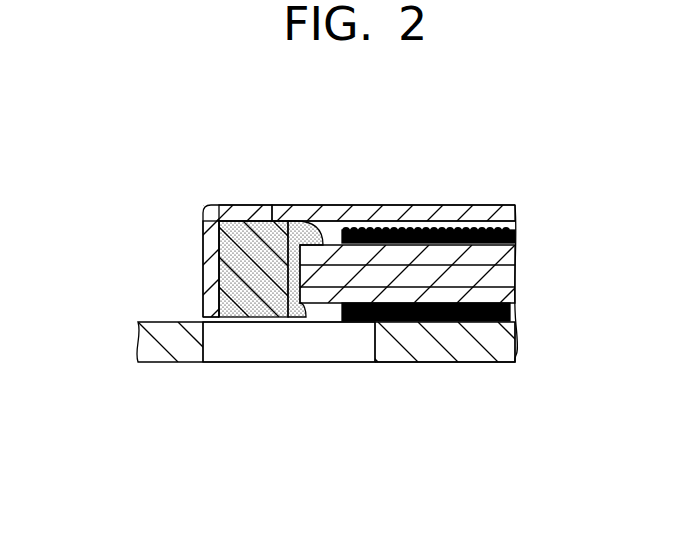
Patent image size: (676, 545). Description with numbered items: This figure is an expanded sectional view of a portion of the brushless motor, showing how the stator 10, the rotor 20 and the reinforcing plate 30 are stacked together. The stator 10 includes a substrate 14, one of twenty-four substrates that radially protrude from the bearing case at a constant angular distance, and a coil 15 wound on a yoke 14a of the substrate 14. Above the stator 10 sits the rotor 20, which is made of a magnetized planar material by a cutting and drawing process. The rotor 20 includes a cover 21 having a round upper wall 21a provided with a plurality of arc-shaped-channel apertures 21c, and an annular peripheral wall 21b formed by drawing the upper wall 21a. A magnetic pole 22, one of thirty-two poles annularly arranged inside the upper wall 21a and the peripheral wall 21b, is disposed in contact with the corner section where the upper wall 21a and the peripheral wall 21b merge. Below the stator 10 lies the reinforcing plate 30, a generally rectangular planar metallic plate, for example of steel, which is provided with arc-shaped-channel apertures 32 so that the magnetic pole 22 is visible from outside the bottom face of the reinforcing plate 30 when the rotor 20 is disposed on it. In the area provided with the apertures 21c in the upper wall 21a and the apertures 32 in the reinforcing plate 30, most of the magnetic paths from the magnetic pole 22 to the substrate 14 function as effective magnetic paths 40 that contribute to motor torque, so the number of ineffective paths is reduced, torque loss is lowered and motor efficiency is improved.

The stator 10 is at (330, 303).
The substrate 14 is at (510, 257).
The yoke 14a is at (438, 275).
The coil 15 is at (437, 236).
The rotor 20 is at (488, 205).
The cover 21 is at (209, 205).
The upper wall 21a is at (230, 205).
The peripheral wall 21b is at (215, 283).
The arc-shaped-channel aperture 21c is at (353, 205).
The magnetic pole 22 is at (247, 310).
The reinforcing plate 30 is at (478, 364).
The arc-shaped-channel aperture 32 is at (303, 340).
The effective magnetic path 40 is at (309, 222).